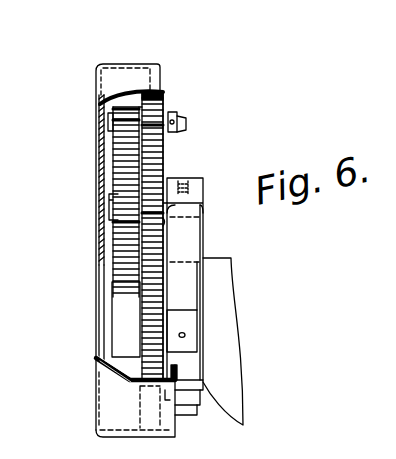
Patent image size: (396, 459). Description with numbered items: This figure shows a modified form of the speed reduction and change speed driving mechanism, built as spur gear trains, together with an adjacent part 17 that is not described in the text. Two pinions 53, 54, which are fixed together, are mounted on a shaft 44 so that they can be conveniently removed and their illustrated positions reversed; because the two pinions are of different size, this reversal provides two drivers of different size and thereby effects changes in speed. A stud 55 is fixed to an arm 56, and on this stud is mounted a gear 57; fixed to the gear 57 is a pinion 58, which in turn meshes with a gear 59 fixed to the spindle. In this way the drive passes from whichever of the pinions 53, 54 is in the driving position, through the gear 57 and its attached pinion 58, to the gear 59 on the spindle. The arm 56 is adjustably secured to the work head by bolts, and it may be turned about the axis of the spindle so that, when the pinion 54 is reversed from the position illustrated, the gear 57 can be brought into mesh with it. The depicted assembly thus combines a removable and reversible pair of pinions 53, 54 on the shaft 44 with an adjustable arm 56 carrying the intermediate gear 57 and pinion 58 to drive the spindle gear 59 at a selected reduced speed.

The flap 17 is at (217, 370).
The shaft 44 is at (172, 126).
The pinion 53 is at (98, 103).
The pinion 54 is at (158, 103).
The stud 55 is at (113, 212).
The arm 56 is at (180, 233).
The gear 57 is at (113, 148).
The pinion 58 is at (152, 207).
The gear 59 is at (155, 322).